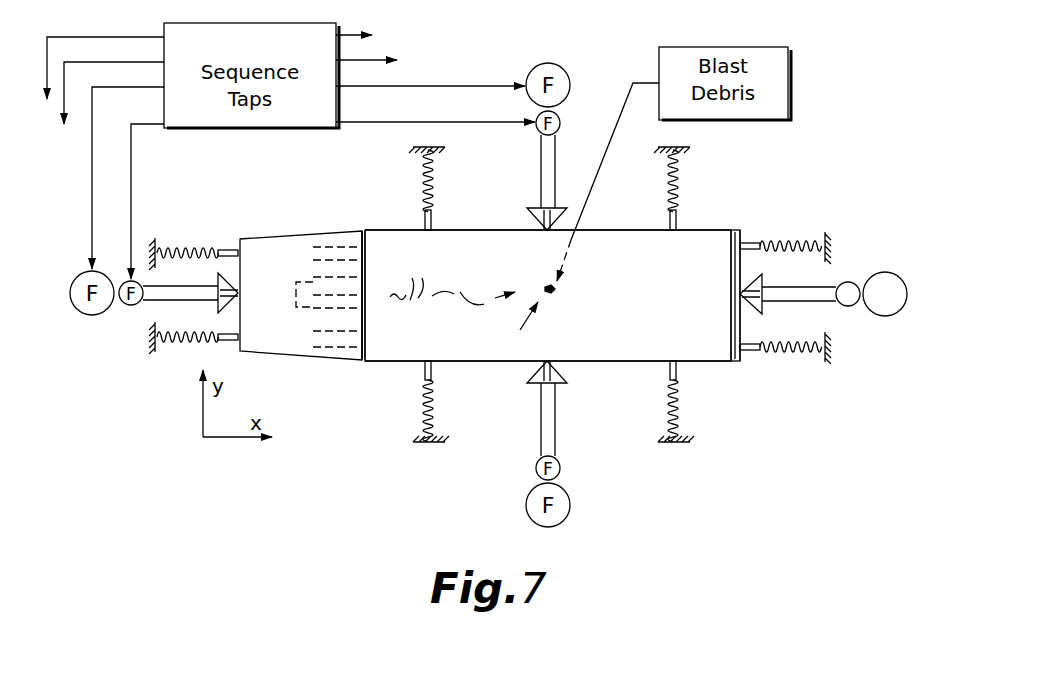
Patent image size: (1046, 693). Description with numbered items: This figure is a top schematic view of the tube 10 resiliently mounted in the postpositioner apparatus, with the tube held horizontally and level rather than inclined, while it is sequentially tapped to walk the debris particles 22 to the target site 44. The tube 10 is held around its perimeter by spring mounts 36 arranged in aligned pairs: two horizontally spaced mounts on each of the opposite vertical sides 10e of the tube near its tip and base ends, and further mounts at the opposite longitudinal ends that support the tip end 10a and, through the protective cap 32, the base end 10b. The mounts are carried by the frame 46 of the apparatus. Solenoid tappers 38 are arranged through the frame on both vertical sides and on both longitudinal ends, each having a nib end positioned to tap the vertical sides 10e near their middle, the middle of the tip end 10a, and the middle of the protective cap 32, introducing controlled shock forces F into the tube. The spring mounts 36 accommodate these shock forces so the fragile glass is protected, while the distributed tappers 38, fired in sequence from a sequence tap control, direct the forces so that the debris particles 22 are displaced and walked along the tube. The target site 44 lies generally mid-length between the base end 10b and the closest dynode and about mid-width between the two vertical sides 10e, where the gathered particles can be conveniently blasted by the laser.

The tube 10 is at (705, 228).
The tip end 10a is at (745, 358).
The base end 10b is at (362, 365).
The vertical sides 10e is at (478, 225).
The debris particles 22 is at (556, 289).
The protective cap 32 is at (283, 233).
The spring mounts 36 is at (677, 165).
The solenoid tappers 38 is at (830, 288).
The target site 44 is at (520, 330).
The frame 46 is at (158, 350).